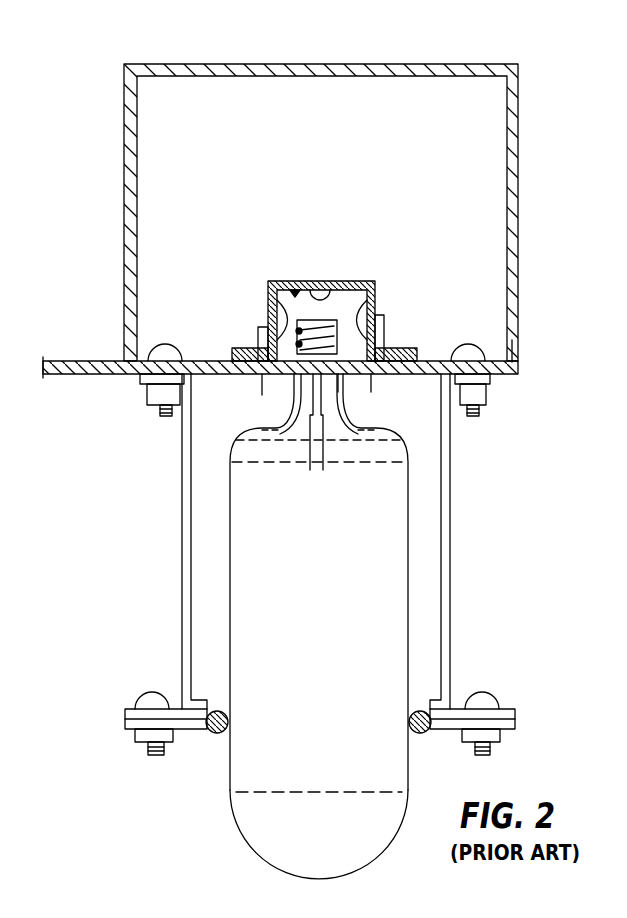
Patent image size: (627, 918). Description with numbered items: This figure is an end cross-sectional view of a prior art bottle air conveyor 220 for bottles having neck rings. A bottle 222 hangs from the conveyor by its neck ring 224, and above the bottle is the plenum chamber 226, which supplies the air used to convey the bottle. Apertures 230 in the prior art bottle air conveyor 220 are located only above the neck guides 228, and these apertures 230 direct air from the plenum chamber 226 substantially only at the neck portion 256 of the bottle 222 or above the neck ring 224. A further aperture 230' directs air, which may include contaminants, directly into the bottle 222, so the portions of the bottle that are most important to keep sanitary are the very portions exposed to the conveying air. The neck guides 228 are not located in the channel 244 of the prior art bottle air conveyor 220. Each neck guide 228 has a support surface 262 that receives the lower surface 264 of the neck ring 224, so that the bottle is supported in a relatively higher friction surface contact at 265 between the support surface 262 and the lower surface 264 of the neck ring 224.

The prior art bottle air conveyor 220 is at (516, 346).
The bottle 222 is at (333, 596).
The neck ring 224 is at (317, 470).
The plenum chamber 226 is at (447, 164).
The neck guide 228 is at (414, 376).
The aperture 230 is at (314, 318).
The aperture 230' is at (316, 263).
The channel 244 is at (295, 292).
The neck portion 256 is at (334, 320).
The support surface 262 is at (317, 397).
The lower surface of neck ring 264 is at (338, 392).
The surface contact 265 is at (382, 340).